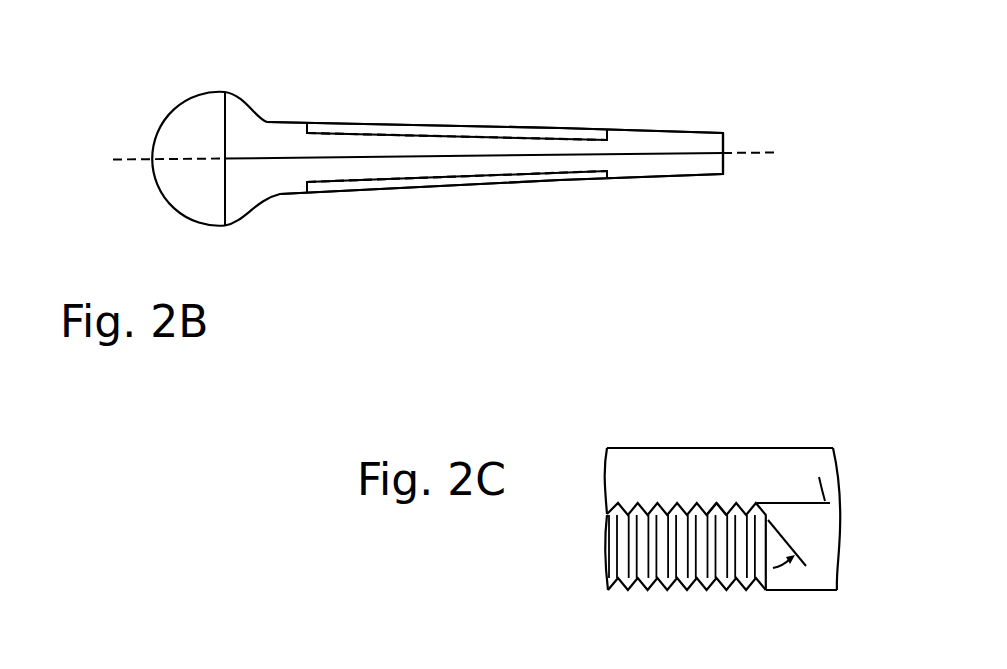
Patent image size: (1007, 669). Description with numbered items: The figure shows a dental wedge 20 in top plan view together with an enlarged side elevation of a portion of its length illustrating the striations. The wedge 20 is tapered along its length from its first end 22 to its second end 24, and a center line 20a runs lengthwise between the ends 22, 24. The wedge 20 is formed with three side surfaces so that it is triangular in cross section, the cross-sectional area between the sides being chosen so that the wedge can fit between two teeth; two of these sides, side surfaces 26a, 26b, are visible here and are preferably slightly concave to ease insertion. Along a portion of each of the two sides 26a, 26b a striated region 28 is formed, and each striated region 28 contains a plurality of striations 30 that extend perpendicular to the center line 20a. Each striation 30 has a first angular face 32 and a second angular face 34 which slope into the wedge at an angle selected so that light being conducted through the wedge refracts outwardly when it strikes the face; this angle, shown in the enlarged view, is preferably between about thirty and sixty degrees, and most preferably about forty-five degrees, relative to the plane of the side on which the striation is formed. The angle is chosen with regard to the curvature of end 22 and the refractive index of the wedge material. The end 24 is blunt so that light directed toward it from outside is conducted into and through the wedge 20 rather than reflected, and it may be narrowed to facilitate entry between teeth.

In FIG. 2B, the wedge 20 is at (594, 106).
In FIG. 2C, the wedge 20 is at (636, 430).
In FIG. 2B, the center line 20a is at (135, 160).
In FIG. 2B, the first end 22 is at (172, 133).
In FIG. 2B, the second end 24 is at (723, 147).
In FIG. 2B, the side surface 26a is at (270, 188).
In FIG. 2B, the side surface 26b is at (268, 120).
In FIG. 2B, the striated region 28 is at (443, 125).
In FIG. 2C, the striated region 28 is at (630, 556).
In FIG. 2C, the striations 30 is at (675, 552).
In FIG. 2C, the first angular face 32 is at (724, 518).
In FIG. 2C, the second angular face 34 is at (708, 513).